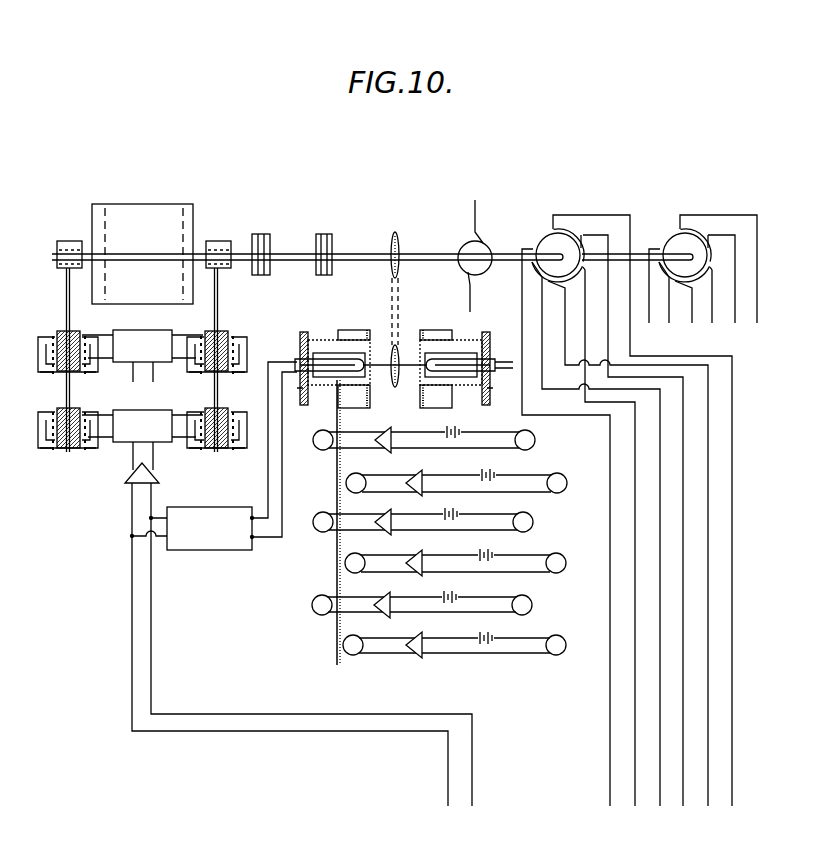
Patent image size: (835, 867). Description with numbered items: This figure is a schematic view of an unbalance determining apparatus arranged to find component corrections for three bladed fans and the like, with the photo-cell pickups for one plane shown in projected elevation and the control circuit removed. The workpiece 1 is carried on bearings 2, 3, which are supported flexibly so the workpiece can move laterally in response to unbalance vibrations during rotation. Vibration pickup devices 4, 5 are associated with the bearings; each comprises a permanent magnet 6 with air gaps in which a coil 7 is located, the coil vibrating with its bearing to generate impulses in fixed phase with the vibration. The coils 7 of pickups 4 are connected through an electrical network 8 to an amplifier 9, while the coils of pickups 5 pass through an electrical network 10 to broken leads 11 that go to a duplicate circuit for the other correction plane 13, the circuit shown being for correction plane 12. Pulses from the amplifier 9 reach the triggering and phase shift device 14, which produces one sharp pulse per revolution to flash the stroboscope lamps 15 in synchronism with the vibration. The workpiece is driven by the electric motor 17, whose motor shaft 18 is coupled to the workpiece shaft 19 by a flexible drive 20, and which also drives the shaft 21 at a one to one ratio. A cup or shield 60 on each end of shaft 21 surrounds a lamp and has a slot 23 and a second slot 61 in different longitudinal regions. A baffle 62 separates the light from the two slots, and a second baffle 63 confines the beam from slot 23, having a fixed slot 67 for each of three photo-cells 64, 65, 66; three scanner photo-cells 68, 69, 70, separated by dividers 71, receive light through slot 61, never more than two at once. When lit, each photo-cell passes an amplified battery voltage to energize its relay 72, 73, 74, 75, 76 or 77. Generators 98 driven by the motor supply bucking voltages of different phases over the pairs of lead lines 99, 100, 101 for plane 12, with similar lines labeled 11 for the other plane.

The workpiece 1 is at (153, 204).
The bearing 2 is at (65, 241).
The bearing 3 is at (218, 241).
The vibration pickup device 4 is at (37, 427).
The vibration pickup device 5 is at (37, 347).
The permanent magnet 6 is at (42, 372).
The coil 7 is at (56, 333).
The electrical network 8 is at (130, 410).
The amplifier 9 is at (124, 481).
The electrical network 10 is at (140, 330).
The broken leads 11 is at (735, 318).
The correction plane 12 is at (105, 208).
The correction plane 13 is at (185, 210).
The triggering and phase shift device 14 is at (205, 550).
The stroboscope lamp 15 is at (345, 357).
The electric motor 17 is at (484, 243).
The motor shaft 18 is at (415, 250).
The workpiece shaft 19 is at (253, 240).
The flexible drive 20 is at (293, 254).
The shaft 21 is at (399, 358).
The slot 23 is at (320, 380).
The cup or shield 60 is at (368, 345).
The slot 61 is at (353, 386).
The baffle 62 is at (337, 625).
The second baffle 63 is at (326, 340).
The photo-cell 64 is at (313, 436).
The photo-cell 65 is at (312, 603).
The photo-cell 66 is at (315, 516).
The fixed slot 67 is at (303, 388).
The scanner photo-cell 68 is at (345, 563).
The scanner photo-cell 69 is at (346, 483).
The scanner photo-cell 70 is at (353, 655).
The baffle plate or divider 71 is at (346, 330).
The relay 72 is at (535, 440).
The relay 73 is at (532, 603).
The relay 74 is at (533, 522).
The relay 75 is at (566, 561).
The relay 76 is at (565, 480).
The relay 77 is at (565, 643).
The generator 98 is at (551, 232).
The pair of lead lines 99 is at (633, 706).
The pair of lead lines 100 is at (682, 714).
The pair of lead lines 101 is at (706, 725).